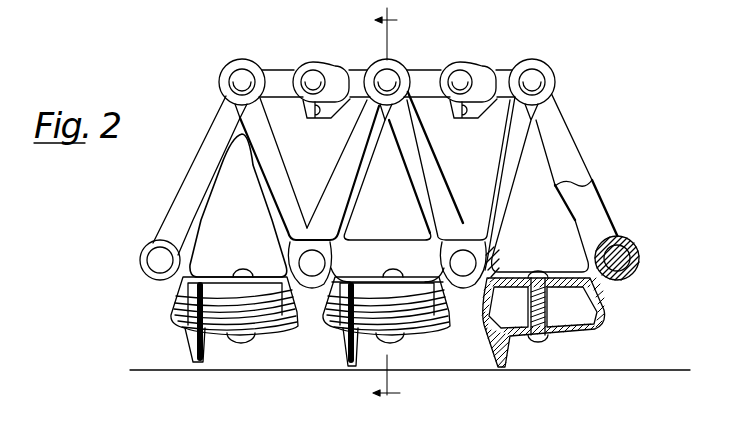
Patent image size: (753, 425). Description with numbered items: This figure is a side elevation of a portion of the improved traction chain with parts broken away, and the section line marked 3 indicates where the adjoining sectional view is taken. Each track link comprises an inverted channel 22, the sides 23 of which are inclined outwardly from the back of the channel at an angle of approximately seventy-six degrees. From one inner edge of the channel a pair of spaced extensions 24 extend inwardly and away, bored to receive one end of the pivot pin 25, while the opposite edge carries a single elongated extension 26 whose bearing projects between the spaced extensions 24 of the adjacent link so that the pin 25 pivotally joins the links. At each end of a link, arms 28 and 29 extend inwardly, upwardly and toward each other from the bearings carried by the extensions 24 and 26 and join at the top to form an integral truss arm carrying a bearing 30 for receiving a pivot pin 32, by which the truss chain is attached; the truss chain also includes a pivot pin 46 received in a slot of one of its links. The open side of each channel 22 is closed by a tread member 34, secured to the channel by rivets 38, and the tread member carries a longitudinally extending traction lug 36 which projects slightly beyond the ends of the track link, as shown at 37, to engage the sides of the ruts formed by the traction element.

The inverted channel 22 is at (258, 273).
The sides of the channel 23 is at (181, 306).
The spaced extensions 24 is at (330, 270).
The pivot pin 25 is at (306, 262).
The single elongated extension 26 is at (440, 280).
The arm 28 is at (342, 204).
The arm 29 is at (431, 167).
The bearing 30 is at (381, 72).
The pivot pin 32 is at (390, 81).
The tread member 34 is at (582, 333).
The traction lug 36 is at (507, 352).
The projecting end of traction lug 37 is at (343, 340).
The rivet 38 is at (392, 345).
The pivot pin 46 is at (314, 80).
The section line 3- 3 is at (388, 209).